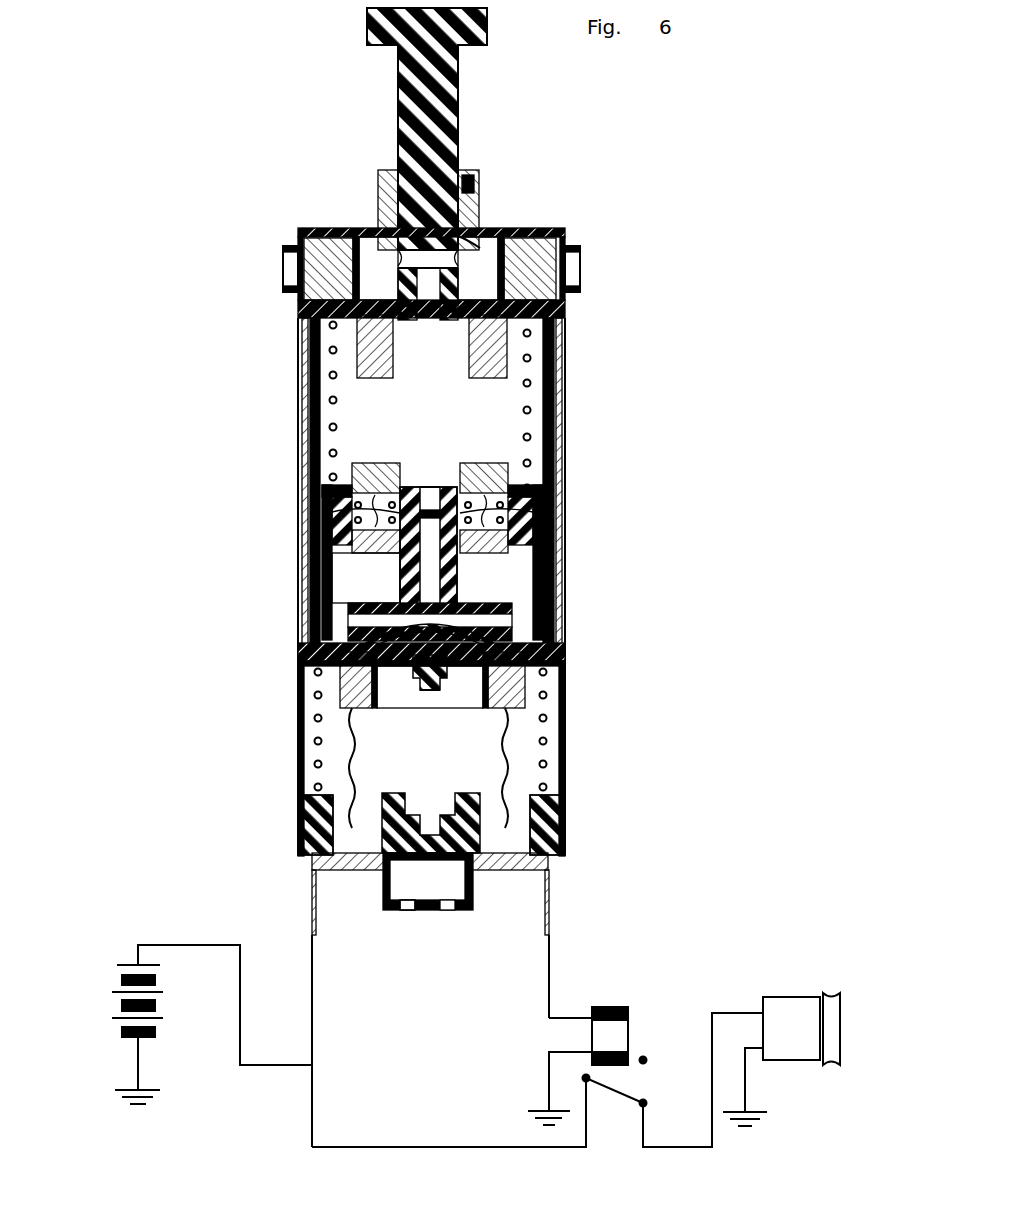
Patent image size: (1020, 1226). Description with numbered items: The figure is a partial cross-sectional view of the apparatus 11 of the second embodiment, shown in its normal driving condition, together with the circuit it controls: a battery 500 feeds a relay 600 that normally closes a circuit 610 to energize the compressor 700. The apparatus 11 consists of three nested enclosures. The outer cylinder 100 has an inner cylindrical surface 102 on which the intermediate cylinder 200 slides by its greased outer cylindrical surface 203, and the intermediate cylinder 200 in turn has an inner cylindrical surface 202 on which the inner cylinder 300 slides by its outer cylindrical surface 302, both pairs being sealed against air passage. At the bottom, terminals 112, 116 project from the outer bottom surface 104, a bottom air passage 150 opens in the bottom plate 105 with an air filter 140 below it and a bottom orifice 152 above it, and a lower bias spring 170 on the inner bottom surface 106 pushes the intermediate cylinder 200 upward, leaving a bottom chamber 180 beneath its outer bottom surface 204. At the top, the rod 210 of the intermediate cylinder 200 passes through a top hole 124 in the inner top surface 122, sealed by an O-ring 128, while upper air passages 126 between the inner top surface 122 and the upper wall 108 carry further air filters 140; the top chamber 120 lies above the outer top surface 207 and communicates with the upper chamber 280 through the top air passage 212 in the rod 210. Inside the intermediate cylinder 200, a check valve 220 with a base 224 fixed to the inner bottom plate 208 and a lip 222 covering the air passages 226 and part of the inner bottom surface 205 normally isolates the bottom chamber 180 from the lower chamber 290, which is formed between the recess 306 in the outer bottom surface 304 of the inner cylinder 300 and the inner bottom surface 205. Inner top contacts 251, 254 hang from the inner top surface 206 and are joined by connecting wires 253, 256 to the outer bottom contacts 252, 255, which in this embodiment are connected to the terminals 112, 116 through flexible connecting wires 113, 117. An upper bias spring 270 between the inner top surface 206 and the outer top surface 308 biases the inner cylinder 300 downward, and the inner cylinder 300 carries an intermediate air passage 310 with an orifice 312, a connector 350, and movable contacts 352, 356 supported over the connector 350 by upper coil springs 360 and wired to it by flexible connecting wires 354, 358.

The apparatus 11 is at (642, 262).
The outer cylinder 100 is at (298, 405).
The inner cylindrical surface 102 is at (300, 690).
The outer bottom surface 104 is at (353, 872).
The bottom plate 105 is at (550, 862).
The inner bottom surface 106 is at (513, 872).
The upper wall 108 is at (300, 312).
The terminal 112 is at (550, 912).
The flexible connecting wire 113 is at (566, 780).
The terminal 116 is at (312, 905).
The flexible connecting wire 117 is at (312, 830).
The top chamber 120 is at (372, 250).
The inner top surface 122 is at (482, 245).
The top hole 124 is at (470, 238).
The upper air passages 126 is at (290, 262).
The O-ring 128 is at (470, 192).
The air filter 140 is at (318, 240).
The bottom air passage 150 is at (462, 870).
The bottom orifice 152 is at (430, 882).
The lower bias spring 170 is at (318, 735).
The bottom chamber 180 is at (566, 758).
The intermediate cylinder 200 is at (566, 399).
The inner cylindrical surface 202 is at (566, 423).
The outer cylindrical surface 203 is at (566, 431).
The outer bottom surface 204 is at (566, 676).
The inner bottom surface 205 is at (392, 768).
The inner top surface 206 is at (566, 328).
The outer top surface 207 is at (472, 330).
The inner bottom plate 208 is at (503, 748).
The rod 210 is at (462, 112).
The top air passage 212 is at (428, 300).
The check valve 220 is at (425, 692).
The lip 222 is at (300, 647).
The base 224 is at (435, 692).
The air passages 226 is at (470, 664).
The inner top contact 251 is at (566, 366).
The outer bottom contact 252 is at (566, 702).
The connecting wire 253 is at (566, 543).
The inner top contact 254 is at (378, 360).
The outer bottom contact 255 is at (340, 700).
The connecting wire 256 is at (310, 356).
The upper bias spring 270 is at (320, 448).
The upper chamber 280 is at (303, 335).
The lower chamber 290 is at (566, 630).
The inner cylinder 300 is at (346, 606).
The outer cylindrical surface 302 is at (372, 586).
The outer bottom surface 304 is at (566, 648).
The recess 306 is at (566, 613).
The outer top surface 308 is at (452, 495).
The intermediate air passage 310 is at (442, 577).
The orifice 312 is at (431, 505).
The connector 350 is at (330, 548).
The movable contact 352 is at (485, 470).
The flexible connecting wire 354 is at (566, 480).
The movable contact 356 is at (375, 470).
The flexible connecting wire 358 is at (322, 513).
The upper coil springs 360 is at (322, 487).
The battery 500 is at (170, 1013).
The relay 600 is at (625, 1028).
The circuit 610 is at (622, 1110).
The compressor 700 is at (795, 1005).